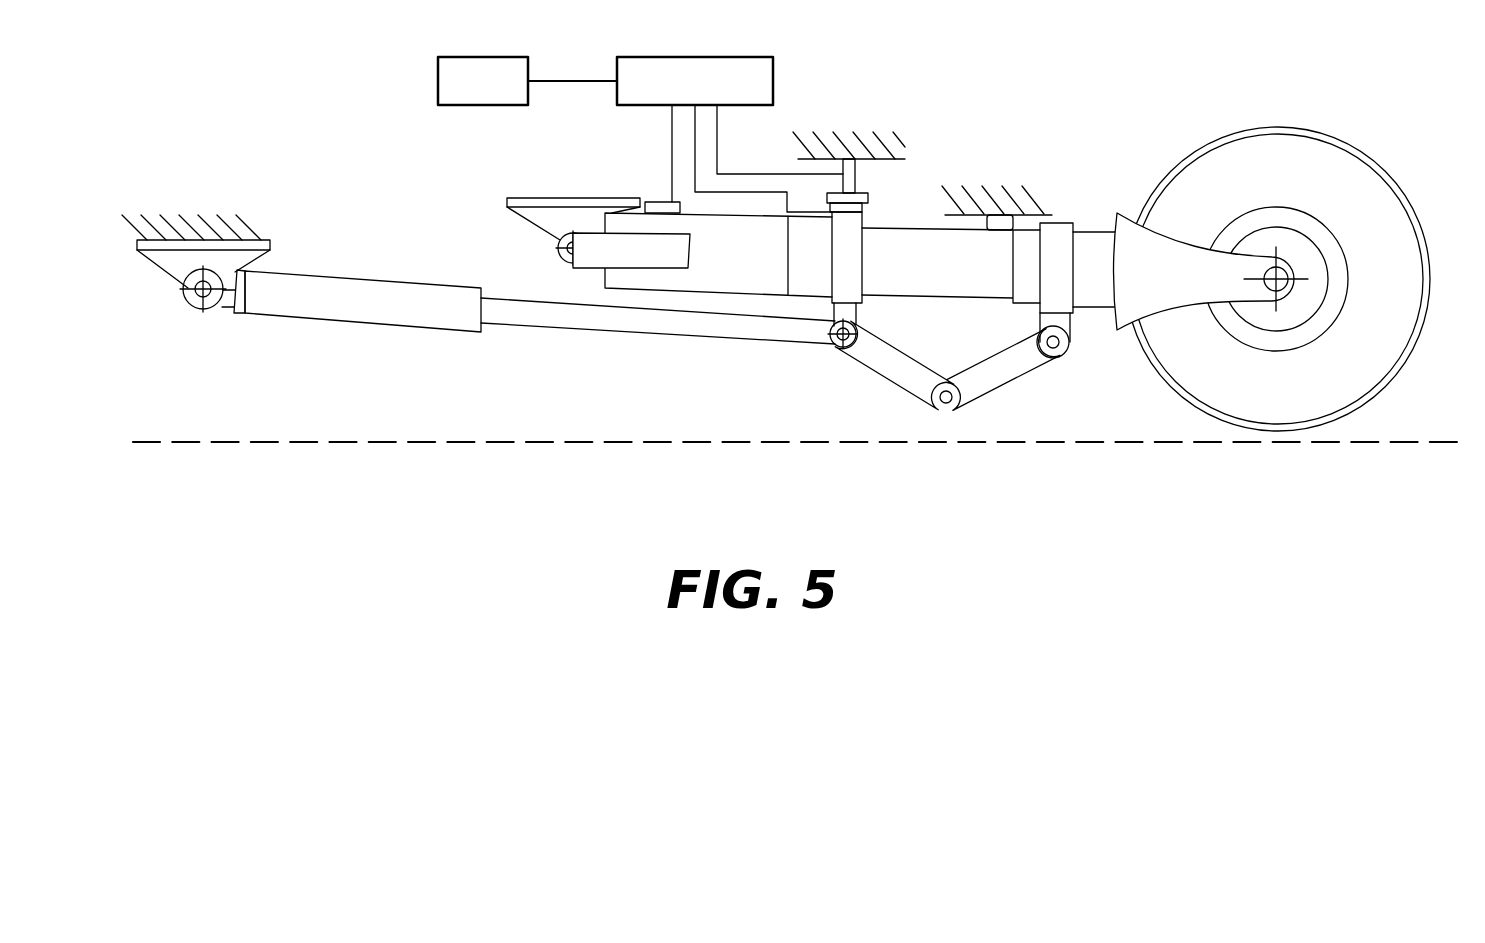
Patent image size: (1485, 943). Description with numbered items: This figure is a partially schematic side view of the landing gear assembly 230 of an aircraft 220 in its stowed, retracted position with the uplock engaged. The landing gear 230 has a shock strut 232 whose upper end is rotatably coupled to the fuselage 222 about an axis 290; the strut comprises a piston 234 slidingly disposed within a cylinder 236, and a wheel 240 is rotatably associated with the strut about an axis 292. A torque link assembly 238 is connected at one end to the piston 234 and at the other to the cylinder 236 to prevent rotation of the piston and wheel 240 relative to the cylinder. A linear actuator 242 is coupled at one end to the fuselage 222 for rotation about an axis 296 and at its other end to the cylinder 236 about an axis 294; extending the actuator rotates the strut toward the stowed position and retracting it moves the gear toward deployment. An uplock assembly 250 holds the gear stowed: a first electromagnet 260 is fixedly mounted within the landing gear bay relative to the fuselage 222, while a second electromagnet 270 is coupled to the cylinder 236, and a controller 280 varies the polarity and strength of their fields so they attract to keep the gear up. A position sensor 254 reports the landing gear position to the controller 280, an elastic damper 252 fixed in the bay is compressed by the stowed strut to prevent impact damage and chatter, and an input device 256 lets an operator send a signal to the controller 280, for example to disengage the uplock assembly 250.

The aircraft 220 is at (195, 472).
The fuselage 222 is at (155, 443).
The landing gear assembly 230 is at (635, 377).
The shock strut 232 is at (712, 298).
The piston 234 is at (928, 287).
The cylinder 236 is at (635, 223).
The torque link assembly 238 is at (882, 392).
The wheel 240 is at (1347, 143).
The actuator 242 is at (348, 283).
The uplock assembly 250 is at (1012, 97).
The elastic damper 252 is at (1013, 224).
The position sensor 254 is at (665, 202).
The input device 256 is at (438, 80).
The first electromagnet 260 is at (868, 200).
The second electromagnet 270 is at (862, 213).
The controller 280 is at (773, 80).
The axis 290 is at (558, 245).
The axis 292 is at (1277, 285).
The axis 294 is at (835, 336).
The axis 296 is at (195, 290).